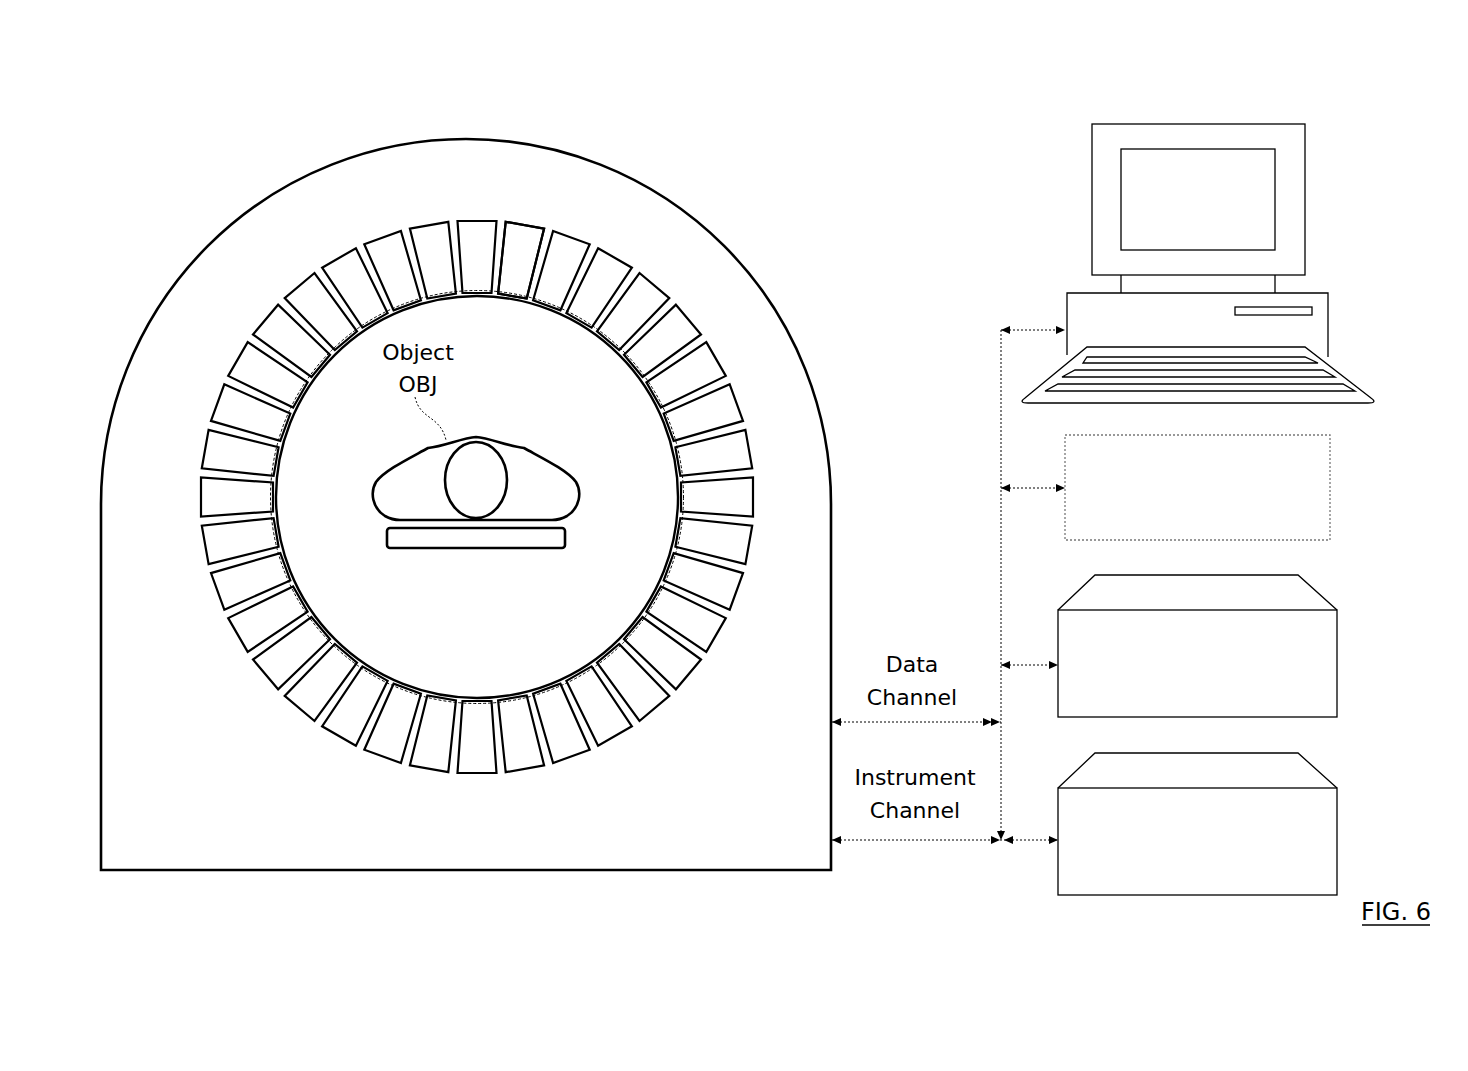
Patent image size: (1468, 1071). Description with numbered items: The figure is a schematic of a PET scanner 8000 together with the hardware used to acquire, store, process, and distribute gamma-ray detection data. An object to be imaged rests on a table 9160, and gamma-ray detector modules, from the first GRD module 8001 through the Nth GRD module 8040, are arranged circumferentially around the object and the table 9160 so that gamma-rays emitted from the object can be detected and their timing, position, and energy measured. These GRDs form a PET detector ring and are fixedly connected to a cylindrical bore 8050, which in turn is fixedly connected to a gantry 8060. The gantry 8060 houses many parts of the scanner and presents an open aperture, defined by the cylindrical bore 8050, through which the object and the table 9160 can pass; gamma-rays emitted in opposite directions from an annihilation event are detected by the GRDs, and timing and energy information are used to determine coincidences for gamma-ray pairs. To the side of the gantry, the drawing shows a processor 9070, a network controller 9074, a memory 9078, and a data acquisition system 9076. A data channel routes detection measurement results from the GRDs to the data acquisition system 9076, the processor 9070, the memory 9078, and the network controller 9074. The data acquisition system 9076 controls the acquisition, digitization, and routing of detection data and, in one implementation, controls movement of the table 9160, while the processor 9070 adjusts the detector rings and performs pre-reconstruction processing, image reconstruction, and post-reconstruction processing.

The PET scanner 8000 is at (905, 87).
The GRD module GRD1 8001 is at (527, 227).
The GRD module GRDN 8040 is at (440, 242).
The cylindrical bore 8050 is at (288, 592).
The gantry 8060 is at (766, 265).
The table 9160 is at (446, 549).
The processor 9070 is at (1277, 194).
The network controller 9074 is at (1330, 488).
The data acquisition system 9076 is at (1338, 836).
The memory 9078 is at (1338, 657).